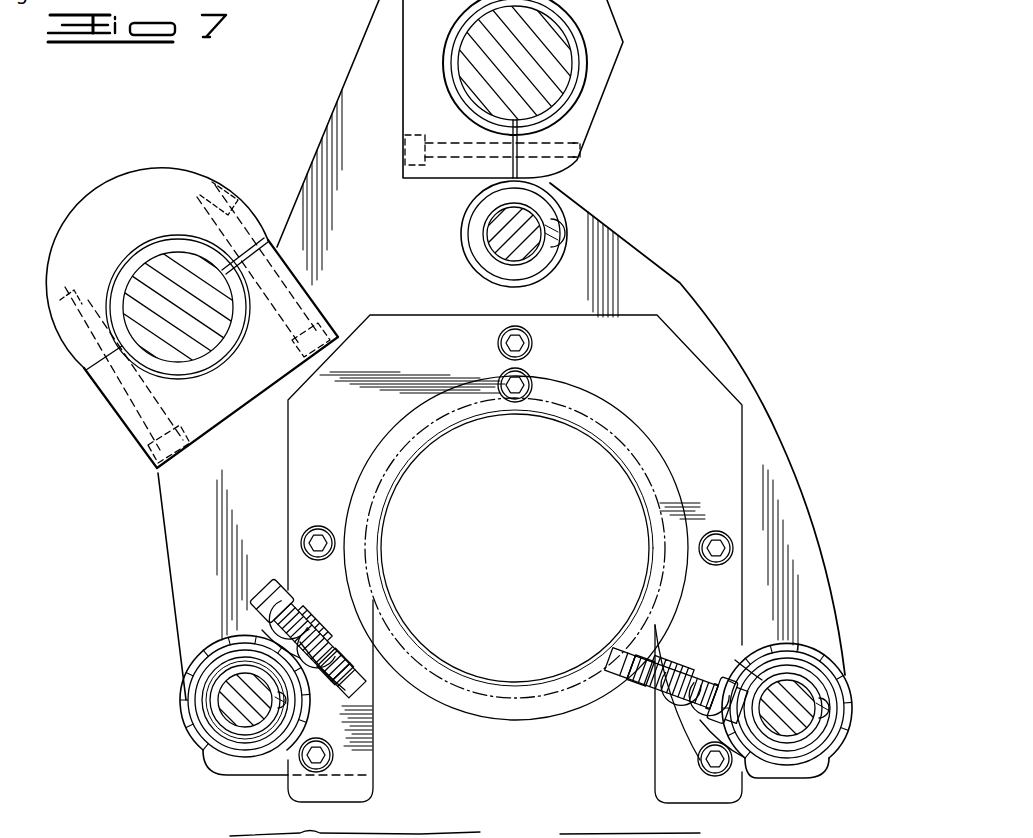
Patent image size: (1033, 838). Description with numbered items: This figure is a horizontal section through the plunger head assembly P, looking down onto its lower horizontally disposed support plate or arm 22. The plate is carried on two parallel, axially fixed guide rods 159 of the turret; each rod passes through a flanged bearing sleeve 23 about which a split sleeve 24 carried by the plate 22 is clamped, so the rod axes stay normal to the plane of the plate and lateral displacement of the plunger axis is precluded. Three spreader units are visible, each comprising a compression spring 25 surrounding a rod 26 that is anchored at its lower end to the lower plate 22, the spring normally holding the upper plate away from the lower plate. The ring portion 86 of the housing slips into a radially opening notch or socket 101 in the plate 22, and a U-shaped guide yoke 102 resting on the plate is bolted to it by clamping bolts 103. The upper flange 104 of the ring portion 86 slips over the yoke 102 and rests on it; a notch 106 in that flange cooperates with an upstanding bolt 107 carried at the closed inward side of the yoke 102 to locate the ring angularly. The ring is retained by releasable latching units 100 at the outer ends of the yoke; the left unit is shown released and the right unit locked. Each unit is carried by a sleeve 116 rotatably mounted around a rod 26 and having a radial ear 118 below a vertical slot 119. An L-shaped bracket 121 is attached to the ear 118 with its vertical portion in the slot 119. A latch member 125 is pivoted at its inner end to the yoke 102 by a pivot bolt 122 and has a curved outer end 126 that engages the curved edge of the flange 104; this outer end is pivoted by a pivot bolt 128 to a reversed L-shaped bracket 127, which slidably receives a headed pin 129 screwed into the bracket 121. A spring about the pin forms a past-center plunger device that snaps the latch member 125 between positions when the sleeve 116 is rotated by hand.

The lower support plate 22 is at (178, 578).
The flanged bearing sleeve 23 is at (117, 280).
The split sleeve 24 is at (167, 200).
The compression spring 25 is at (477, 213).
The rod 26 is at (503, 243).
The ring portion 86 is at (867, 773).
The latching unit 100 is at (302, 597).
The notch 101 is at (630, 482).
The guide yoke 102 is at (658, 773).
The clamping bolt 103 is at (502, 342).
The upper flange 104 is at (553, 717).
The notch 106 is at (558, 385).
The upstanding bolt 107 is at (502, 380).
The sleeve 116 is at (195, 664).
The radial ear 118 is at (257, 633).
The vertical slot 119 is at (247, 633).
The L-shaped bracket 121 is at (272, 590).
The pivot bolt 122 is at (318, 768).
The latch member 125 is at (355, 745).
The curved outer end 126 is at (307, 637).
The L-shaped bracket 127 is at (360, 662).
The pivot bolt 128 is at (345, 650).
The headed pin 129 is at (365, 700).
The guide rod 159 is at (150, 263).
The plunger head assembly P is at (685, 283).